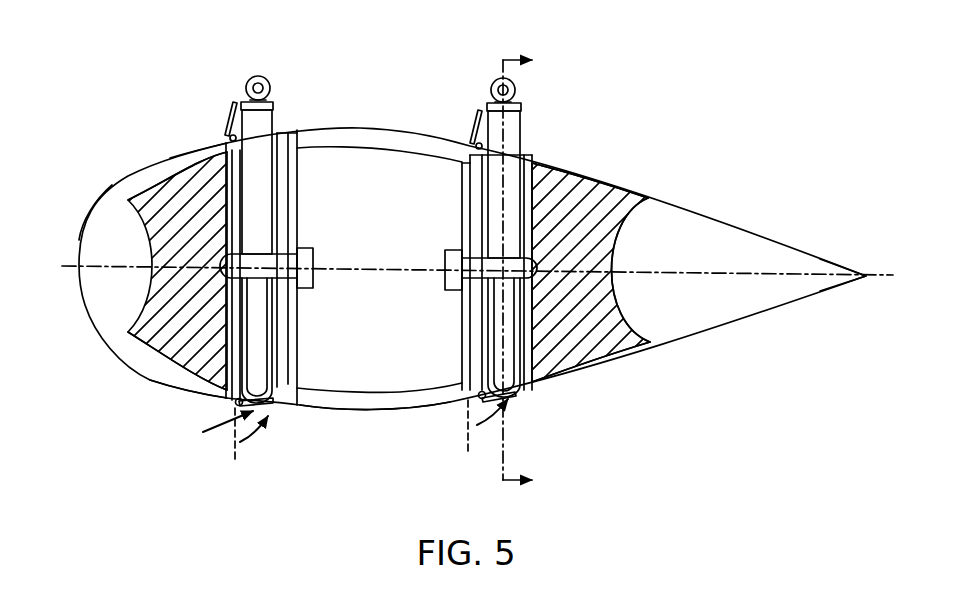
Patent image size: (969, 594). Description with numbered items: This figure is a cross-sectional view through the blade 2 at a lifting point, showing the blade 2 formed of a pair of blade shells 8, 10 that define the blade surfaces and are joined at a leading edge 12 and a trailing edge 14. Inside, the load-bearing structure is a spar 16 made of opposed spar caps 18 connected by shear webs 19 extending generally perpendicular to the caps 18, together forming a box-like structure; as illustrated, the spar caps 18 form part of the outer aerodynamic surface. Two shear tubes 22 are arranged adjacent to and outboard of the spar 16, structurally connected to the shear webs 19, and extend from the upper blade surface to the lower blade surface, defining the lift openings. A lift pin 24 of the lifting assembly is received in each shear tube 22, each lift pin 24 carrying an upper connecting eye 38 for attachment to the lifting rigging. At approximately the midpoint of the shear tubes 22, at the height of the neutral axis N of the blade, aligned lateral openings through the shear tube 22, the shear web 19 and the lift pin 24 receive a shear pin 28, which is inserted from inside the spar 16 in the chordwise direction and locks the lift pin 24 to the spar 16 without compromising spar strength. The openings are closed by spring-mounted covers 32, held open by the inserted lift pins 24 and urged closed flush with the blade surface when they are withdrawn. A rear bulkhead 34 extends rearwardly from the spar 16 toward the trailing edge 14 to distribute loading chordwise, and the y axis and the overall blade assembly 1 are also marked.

The rotor blade 1 is at (472, 265).
The blade 2 is at (430, 258).
The blade shell 8 is at (201, 150).
The blade shell 10 is at (182, 388).
The leading edge 12 is at (73, 268).
The trailing edge 14 is at (857, 283).
The spar 16 is at (366, 437).
The spar cap 18 is at (318, 138).
The shear web 19 is at (292, 373).
The shear tube 22 is at (232, 185).
The lift pin 24 is at (507, 363).
The shear pin 28 is at (290, 254).
The spring-mounted cover 32 is at (147, 337).
The rear bulkhead 34 is at (628, 337).
The upper connecting eye 38 is at (256, 77).
The neutral axis N is at (672, 271).
The y axis y is at (376, 272).